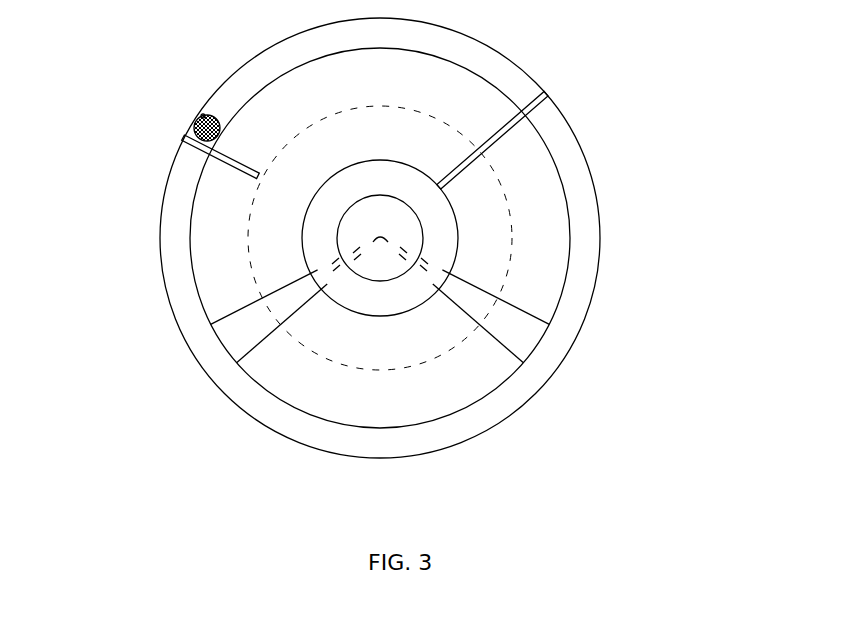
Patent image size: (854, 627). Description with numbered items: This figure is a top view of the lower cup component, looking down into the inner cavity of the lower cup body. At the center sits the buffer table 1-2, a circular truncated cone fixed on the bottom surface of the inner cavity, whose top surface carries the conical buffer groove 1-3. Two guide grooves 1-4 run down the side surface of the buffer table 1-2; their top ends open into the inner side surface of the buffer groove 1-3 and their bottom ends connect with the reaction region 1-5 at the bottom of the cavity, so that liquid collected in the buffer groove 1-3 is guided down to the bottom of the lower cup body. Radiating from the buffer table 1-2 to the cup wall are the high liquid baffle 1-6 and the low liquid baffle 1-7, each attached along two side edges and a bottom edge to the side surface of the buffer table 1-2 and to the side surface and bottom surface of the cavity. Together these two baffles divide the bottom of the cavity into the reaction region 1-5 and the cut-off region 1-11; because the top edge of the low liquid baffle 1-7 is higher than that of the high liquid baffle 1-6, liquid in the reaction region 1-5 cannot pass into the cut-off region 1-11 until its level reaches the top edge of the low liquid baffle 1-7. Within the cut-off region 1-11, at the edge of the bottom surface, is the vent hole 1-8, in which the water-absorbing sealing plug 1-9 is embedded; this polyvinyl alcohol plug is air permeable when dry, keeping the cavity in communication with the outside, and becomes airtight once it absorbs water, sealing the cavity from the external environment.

The cut-off region 1-11 is at (478, 60).
The reaction region 1-5 is at (565, 317).
The buffer table 1-2 is at (535, 197).
The buffer groove 1-3 is at (412, 233).
The high liquid baffle 1-6 is at (532, 108).
The guide grooves 1-4 is at (247, 328).
The low liquid baffle 1-7 is at (218, 138).
The vent hole 1-8 is at (195, 128).
The water-absorbing sealing plug 1-9 is at (202, 114).